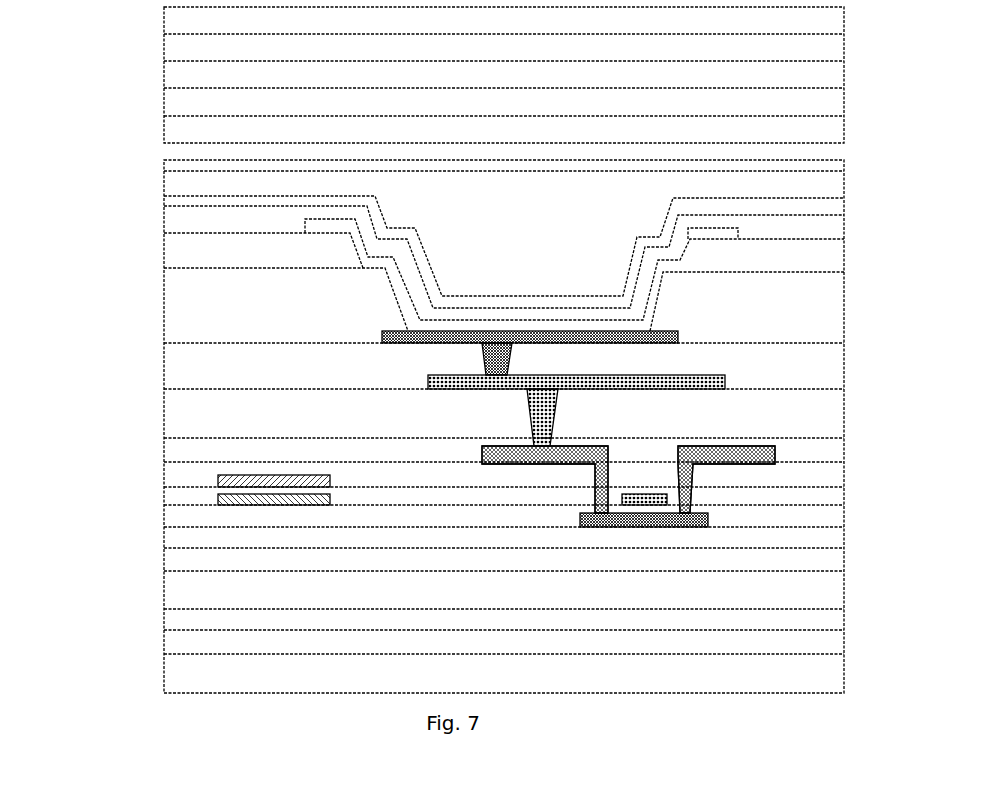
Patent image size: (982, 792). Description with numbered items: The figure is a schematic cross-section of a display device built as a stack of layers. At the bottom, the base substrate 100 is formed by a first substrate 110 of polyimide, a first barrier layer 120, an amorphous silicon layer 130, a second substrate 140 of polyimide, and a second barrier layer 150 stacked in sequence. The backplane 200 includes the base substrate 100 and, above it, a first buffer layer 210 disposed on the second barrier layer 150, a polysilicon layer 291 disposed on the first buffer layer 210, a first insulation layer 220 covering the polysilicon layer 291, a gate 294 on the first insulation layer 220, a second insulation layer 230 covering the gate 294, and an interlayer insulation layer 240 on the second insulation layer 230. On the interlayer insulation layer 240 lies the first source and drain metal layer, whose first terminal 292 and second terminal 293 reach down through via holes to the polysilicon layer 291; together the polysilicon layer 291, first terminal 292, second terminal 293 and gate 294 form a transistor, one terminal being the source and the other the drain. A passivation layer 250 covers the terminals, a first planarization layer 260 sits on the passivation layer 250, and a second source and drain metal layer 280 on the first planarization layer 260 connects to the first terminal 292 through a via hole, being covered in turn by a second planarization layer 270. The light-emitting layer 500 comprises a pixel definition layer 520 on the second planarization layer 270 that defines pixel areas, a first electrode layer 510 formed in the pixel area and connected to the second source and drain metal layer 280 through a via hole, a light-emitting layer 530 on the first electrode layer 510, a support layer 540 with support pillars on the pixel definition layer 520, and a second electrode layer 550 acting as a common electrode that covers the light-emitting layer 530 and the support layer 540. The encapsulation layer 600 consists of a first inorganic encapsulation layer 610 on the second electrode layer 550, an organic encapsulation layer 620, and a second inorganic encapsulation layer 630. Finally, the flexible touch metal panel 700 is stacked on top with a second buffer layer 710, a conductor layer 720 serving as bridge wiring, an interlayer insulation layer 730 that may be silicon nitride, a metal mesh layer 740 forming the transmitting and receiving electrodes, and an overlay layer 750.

The base substrate 100 is at (162, 547).
The first substrate 110 is at (808, 673).
The first barrier layer 120 is at (808, 638).
The amorphous silicon layer 130 is at (808, 615).
The second substrate 140 is at (808, 585).
The second barrier layer 150 is at (808, 553).
The backplane 200 is at (115, 347).
The first buffer layer 210 is at (808, 532).
The first insulation layer 220 is at (808, 511).
The second insulation layer 230 is at (808, 490).
The interlayer insulation layer 240 is at (808, 468).
The passivation layer 250 is at (808, 445).
The first planarization layer 260 is at (808, 412).
The second planarization layer 270 is at (808, 376).
The second source and drain metal layer 280 is at (725, 375).
The polysilicon layer 291 is at (707, 525).
The first terminal 292 is at (588, 458).
The second terminal 293 is at (703, 455).
The gate 294 is at (634, 503).
The light-emitting layer 500 is at (152, 217).
The first electrode layer 510 is at (678, 331).
The pixel definition layer 520 is at (808, 300).
The light-emitting layer 530 is at (655, 286).
The support layer 540 is at (808, 252).
The second electrode layer 550 is at (808, 223).
The encapsulation layer 600 is at (152, 160).
The first inorganic encapsulation layer 610 is at (808, 203).
The organic encapsulation layer 620 is at (808, 183).
The second inorganic encapsulation layer 630 is at (808, 160).
The flexible touch metal panel 700 is at (158, 12).
The second buffer layer 710 is at (808, 127).
The conductor layer 720 is at (808, 99).
The interlayer insulation layer 730 is at (808, 70).
The metal mesh layer 740 is at (808, 43).
The overlay layer 750 is at (808, 18).